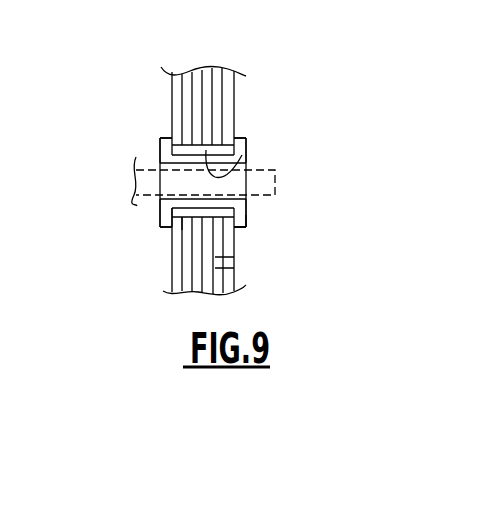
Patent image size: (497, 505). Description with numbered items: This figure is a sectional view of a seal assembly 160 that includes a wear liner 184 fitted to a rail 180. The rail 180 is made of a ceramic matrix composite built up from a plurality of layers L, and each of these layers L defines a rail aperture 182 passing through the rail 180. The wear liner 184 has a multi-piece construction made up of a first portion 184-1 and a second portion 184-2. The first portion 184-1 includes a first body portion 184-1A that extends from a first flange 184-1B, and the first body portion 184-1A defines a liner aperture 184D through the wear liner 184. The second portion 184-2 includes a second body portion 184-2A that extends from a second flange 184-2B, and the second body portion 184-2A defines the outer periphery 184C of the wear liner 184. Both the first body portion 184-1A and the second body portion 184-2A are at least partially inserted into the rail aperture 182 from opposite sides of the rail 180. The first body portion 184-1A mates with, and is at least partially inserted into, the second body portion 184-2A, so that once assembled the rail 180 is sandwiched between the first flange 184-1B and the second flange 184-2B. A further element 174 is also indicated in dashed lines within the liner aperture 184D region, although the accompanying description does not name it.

The seal assembly 160 is at (113, 46).
The rail 180 is at (235, 97).
The wear liner 184 is at (206, 180).
The first portion 184-1 is at (161, 150).
The first body portion 184-1A is at (248, 163).
The first flange 184-1B is at (161, 210).
The rail aperture 182 is at (242, 155).
The bore 174 is at (276, 170).
The liner aperture 184D is at (247, 196).
The second portion 184-2 is at (247, 215).
The second flange 184-2B is at (247, 227).
The outer periphery 184C is at (190, 218).
The second body portion 184-2A is at (208, 210).
The layers L is at (234, 257).